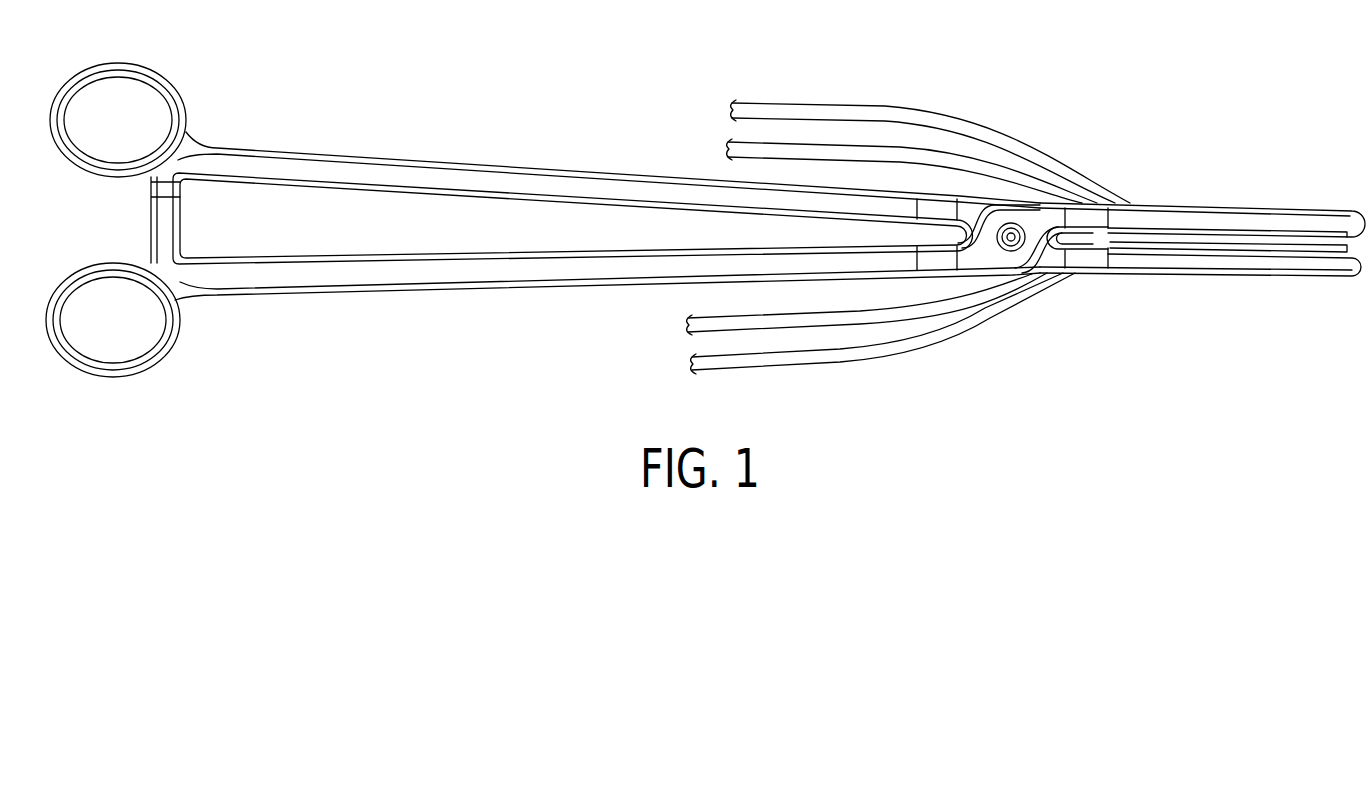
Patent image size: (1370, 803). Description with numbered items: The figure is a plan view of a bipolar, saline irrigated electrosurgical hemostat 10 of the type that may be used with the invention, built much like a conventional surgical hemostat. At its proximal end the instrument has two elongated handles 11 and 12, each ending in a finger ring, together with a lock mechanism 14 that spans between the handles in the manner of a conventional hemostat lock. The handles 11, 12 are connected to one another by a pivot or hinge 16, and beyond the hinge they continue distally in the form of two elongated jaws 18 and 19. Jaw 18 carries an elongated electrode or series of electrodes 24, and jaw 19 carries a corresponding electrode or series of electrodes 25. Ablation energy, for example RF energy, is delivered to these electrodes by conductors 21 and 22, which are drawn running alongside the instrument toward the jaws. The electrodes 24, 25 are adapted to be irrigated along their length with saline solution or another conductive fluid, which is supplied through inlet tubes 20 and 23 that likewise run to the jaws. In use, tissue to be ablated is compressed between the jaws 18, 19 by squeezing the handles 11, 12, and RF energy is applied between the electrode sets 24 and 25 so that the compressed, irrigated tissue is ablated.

The electrosurgical forceps instrument 10 is at (473, 325).
The elongated handle 11 is at (392, 135).
The elongated handle 12 is at (310, 310).
The lock mechanism 14 is at (215, 205).
The pivot or hinge 16 is at (1030, 224).
The elongated jaw 18 is at (1155, 195).
The elongated jaw 19 is at (1133, 285).
The inlet tube 20 is at (730, 105).
The conductor 21 is at (727, 147).
The conductor 22 is at (686, 324).
The inlet tube 23 is at (690, 362).
The electrode or series of electrodes 24 is at (1192, 232).
The electrode or series of electrodes 25 is at (1176, 242).